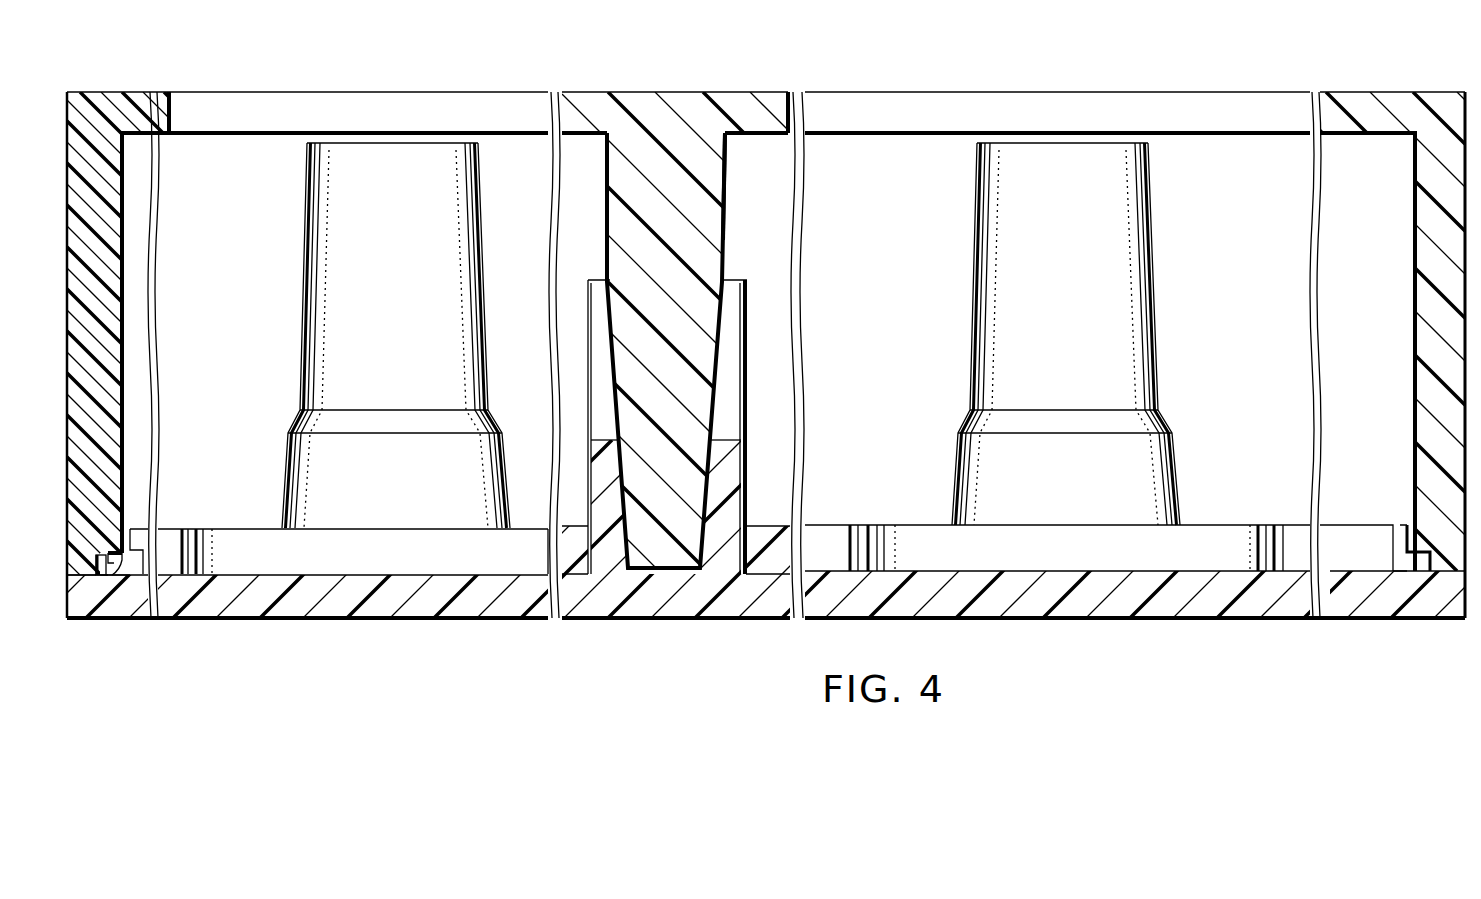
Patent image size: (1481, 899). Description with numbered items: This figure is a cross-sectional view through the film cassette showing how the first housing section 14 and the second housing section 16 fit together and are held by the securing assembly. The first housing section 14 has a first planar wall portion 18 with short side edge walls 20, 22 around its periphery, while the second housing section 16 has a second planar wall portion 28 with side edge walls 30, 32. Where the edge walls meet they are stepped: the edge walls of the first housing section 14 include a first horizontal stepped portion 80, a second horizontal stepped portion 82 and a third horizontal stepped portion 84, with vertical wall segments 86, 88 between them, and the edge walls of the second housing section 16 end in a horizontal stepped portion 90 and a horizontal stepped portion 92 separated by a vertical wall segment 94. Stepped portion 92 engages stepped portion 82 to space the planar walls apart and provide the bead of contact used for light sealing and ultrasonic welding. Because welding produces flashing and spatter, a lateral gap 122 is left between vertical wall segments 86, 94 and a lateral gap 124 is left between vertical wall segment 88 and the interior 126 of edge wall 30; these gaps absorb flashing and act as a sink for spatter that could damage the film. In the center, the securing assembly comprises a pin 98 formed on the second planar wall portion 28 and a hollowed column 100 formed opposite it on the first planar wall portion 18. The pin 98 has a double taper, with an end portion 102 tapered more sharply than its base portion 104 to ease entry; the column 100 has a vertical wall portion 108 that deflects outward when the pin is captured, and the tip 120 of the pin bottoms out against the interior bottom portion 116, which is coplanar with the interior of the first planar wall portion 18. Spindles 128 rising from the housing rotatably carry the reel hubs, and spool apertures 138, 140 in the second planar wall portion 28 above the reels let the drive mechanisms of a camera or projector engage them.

The first housing section 14 is at (762, 630).
The second housing section 16 is at (675, 329).
The first planar wall portion 18 is at (830, 588).
The side edge wall 20 is at (148, 598).
The side edge wall 22 is at (1420, 578).
The second planar wall portion 28 is at (756, 110).
The side edge wall 30 is at (110, 316).
The side edge wall 32 is at (1420, 260).
The first horizontal stepped portion 80 is at (96, 580).
The second horizontal stepped portion 82 is at (118, 573).
The third horizontal stepped portion 84 is at (140, 531).
The vertical wall segment 86 is at (112, 562).
The vertical wall segment 88 is at (130, 549).
The horizontal stepped portion 90 is at (70, 578).
The horizontal stepped portion 92 is at (108, 552).
The vertical wall segment 94 is at (95, 572).
The pin 98 is at (735, 220).
The hollowed column 100 is at (715, 427).
The end portion 102 is at (690, 462).
The base portion 104 is at (712, 173).
The vertical wall portion 108 is at (732, 506).
The interior bottom portion 116 is at (680, 572).
The tip 120 is at (640, 572).
The lateral gap 122 is at (108, 586).
The lateral gap 124 is at (125, 545).
The interior of the edge wall 126 is at (122, 463).
The spindle 128 is at (485, 206).
The spool aperture 138 is at (499, 110).
The spool aperture 140 is at (1066, 108).